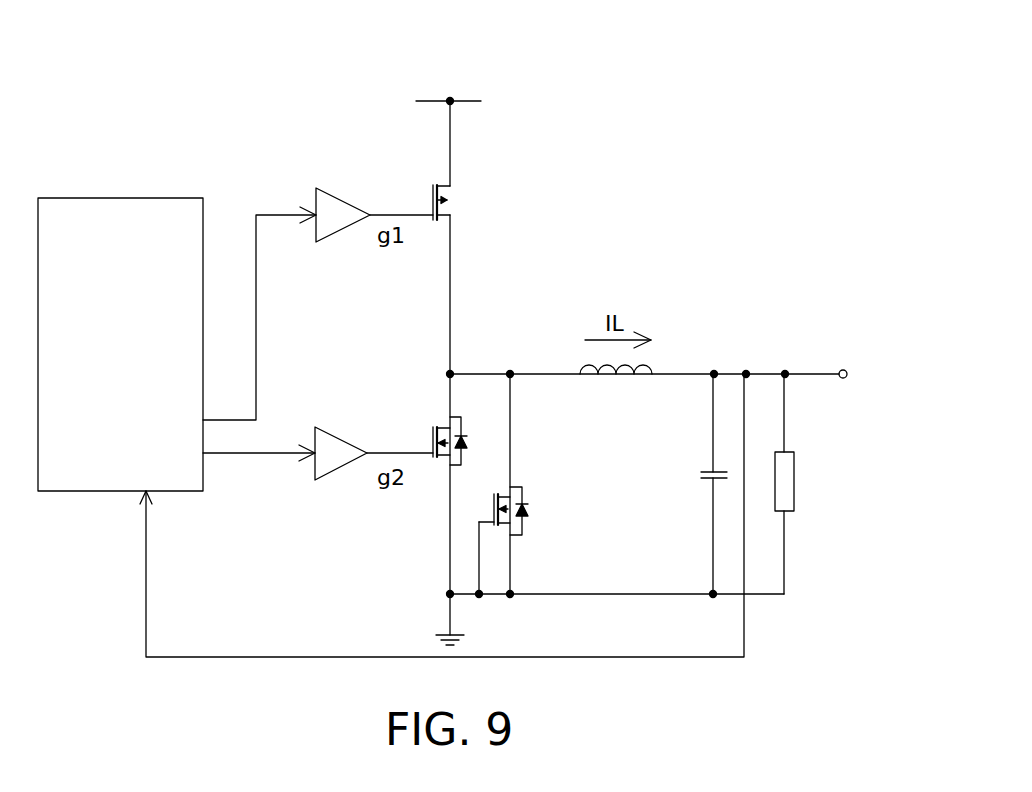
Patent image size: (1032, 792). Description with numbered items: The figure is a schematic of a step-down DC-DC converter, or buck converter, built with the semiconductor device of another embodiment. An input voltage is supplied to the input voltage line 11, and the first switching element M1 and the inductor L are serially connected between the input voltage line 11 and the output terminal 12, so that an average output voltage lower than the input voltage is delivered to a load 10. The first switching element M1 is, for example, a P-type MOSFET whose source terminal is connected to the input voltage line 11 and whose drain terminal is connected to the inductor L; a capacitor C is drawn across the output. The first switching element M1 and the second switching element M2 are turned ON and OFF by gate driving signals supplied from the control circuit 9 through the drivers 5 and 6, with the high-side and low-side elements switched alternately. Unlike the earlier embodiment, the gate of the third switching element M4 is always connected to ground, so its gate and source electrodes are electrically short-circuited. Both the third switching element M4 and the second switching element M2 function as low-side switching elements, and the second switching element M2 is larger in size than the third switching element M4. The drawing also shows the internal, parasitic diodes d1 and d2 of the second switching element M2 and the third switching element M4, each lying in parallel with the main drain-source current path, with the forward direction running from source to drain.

The control circuit 9 is at (79, 208).
The driver 5 is at (349, 205).
The driver 6 is at (334, 446).
The input voltage line 11 is at (428, 100).
The output terminal 12 is at (845, 368).
The load 10 is at (787, 484).
The first switching element M1 is at (460, 196).
The second switching element M2 is at (428, 424).
The third switching element M4 is at (487, 506).
The internal diode d1 is at (463, 440).
The internal diode d2 is at (528, 511).
The inductor L is at (616, 389).
The output capacitor C is at (702, 483).